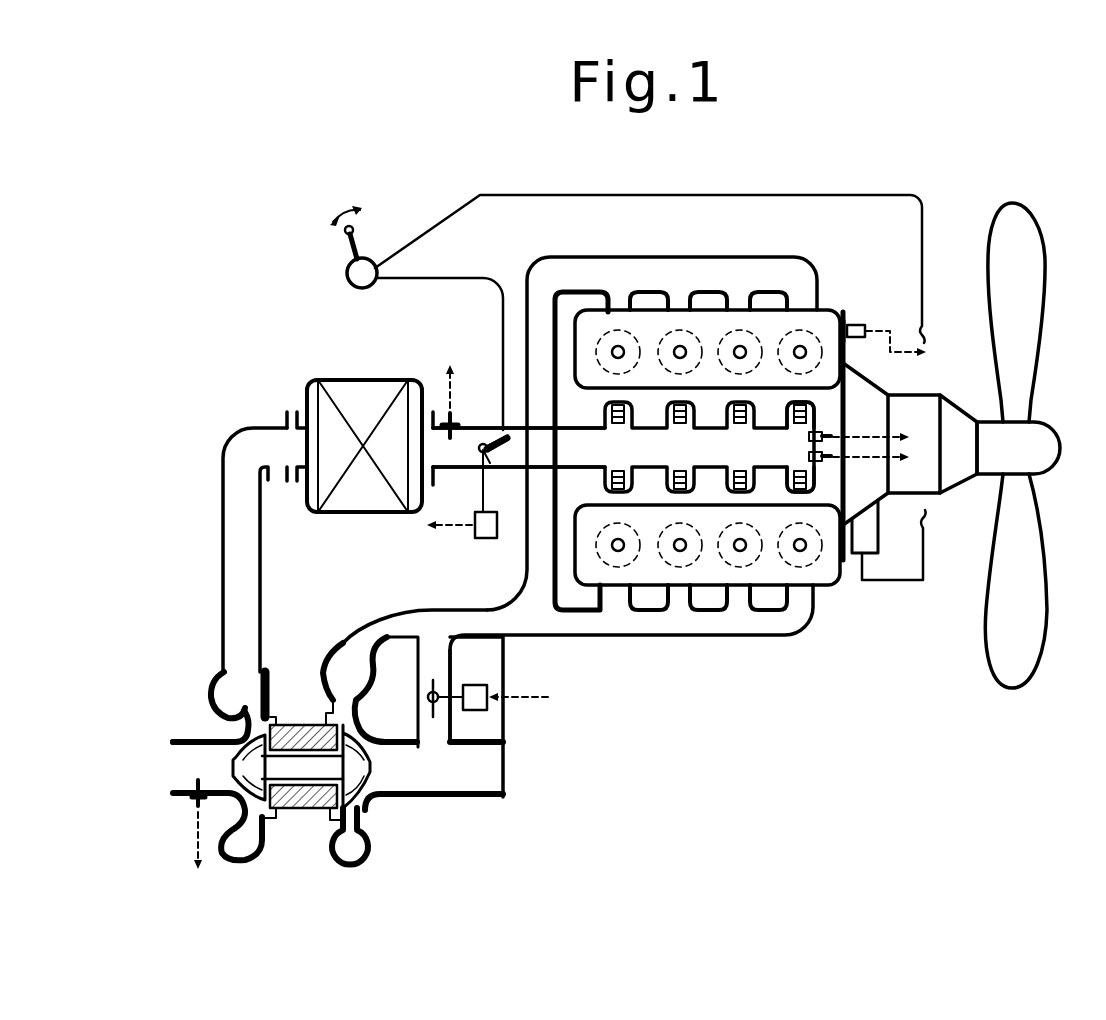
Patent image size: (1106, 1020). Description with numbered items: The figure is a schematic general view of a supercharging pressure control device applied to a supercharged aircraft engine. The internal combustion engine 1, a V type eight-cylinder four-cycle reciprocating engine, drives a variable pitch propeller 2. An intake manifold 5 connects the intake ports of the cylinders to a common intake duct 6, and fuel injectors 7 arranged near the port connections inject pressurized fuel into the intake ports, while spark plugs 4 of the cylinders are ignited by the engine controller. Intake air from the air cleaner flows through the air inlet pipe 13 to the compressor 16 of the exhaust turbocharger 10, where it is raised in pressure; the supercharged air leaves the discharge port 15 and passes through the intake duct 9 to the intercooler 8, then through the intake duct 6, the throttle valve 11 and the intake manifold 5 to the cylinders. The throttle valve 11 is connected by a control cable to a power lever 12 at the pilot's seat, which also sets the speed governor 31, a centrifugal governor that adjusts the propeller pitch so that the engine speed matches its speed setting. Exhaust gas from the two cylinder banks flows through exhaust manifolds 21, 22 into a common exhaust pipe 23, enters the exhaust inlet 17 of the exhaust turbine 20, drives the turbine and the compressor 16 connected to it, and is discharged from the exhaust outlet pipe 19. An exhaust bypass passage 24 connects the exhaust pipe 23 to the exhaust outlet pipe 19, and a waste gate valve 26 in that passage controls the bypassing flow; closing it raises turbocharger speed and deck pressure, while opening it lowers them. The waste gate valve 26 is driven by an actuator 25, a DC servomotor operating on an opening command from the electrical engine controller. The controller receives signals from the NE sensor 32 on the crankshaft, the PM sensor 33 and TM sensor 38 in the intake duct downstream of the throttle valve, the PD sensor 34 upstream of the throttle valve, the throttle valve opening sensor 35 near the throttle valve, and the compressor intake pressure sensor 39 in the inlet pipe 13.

The internal combustion engine 1 is at (845, 310).
The propeller 2 is at (993, 240).
The spark plug 4 is at (740, 551).
The intake manifold 5 is at (817, 412).
The intake duct 6 is at (820, 408).
The fuel injector 7 is at (620, 474).
The intercooler 8 is at (347, 506).
The intake duct 9 is at (223, 543).
The exhaust turbocharger 10 is at (292, 717).
The throttle valve 11 is at (476, 466).
The power lever 12 is at (371, 251).
The air inlet pipe 13 is at (195, 742).
The discharge port 15 is at (215, 682).
The compressor 16 is at (233, 766).
The exhaust inlet 17 is at (336, 645).
The exhaust outlet pipe 19 is at (484, 779).
The exhaust turbine 20 is at (373, 769).
The exhaust manifold 21 is at (545, 280).
The exhaust manifold 22 is at (800, 628).
The common exhaust pipe 23 is at (398, 616).
The exhaust bypass passage 24 is at (428, 731).
The actuator 25 is at (483, 690).
The waste gate valve 26 is at (421, 685).
The speed governor 31 is at (860, 556).
The NE sensor 32 is at (862, 324).
The PM sensor 33 is at (823, 433).
The PD sensor 34 is at (455, 420).
The throttle valve opening sensor 35 is at (486, 541).
The TM sensor 38 is at (806, 457).
The compressor intake pressure sensor 39 is at (193, 807).